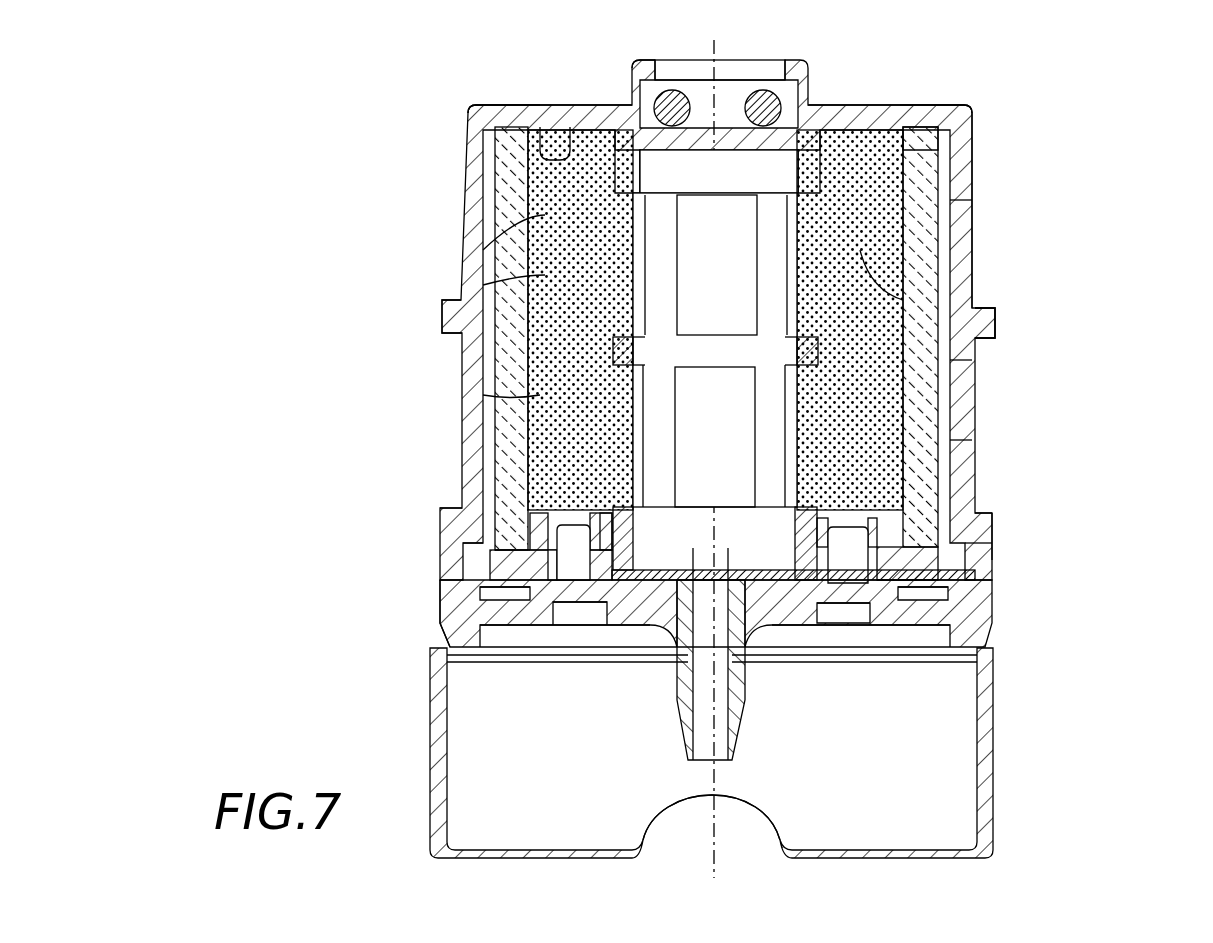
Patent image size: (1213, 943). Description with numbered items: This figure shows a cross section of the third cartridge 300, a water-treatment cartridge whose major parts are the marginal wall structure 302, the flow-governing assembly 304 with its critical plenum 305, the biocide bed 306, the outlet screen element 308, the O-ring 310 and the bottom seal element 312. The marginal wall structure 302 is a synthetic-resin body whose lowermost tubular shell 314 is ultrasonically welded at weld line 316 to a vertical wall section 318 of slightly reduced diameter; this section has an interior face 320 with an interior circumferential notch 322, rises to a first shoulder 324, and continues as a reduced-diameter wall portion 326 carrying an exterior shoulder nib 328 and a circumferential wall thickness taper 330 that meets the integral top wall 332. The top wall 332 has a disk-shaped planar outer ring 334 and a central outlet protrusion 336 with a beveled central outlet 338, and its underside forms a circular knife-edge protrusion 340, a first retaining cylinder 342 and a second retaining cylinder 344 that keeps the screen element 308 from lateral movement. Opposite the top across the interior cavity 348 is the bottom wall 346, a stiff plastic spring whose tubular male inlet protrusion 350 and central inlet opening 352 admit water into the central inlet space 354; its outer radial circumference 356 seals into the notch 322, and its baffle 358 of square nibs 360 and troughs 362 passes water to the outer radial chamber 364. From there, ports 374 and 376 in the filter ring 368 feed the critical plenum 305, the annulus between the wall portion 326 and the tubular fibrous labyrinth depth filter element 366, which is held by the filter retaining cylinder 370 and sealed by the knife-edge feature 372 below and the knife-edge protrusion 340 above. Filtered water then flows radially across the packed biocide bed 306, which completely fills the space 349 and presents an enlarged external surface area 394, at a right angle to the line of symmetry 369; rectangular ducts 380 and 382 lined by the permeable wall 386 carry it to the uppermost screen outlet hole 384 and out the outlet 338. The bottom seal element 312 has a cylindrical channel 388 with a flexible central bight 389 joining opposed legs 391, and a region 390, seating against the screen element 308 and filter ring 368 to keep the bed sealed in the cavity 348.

The third cartridge 300 is at (978, 108).
The marginal wall structure 302 is at (462, 161).
The flow-governing assembly 304 is at (962, 410).
The critical plenum 305 is at (478, 172).
The biocide bed 306 is at (940, 160).
The outlet screen element 308 is at (812, 118).
The O-ring 310 is at (772, 72).
The bottom seal element 312 is at (614, 530).
The lowermost tubular shell 314 is at (992, 700).
The weld line 316 is at (645, 680).
The vertical wall section 318 is at (960, 578).
The interior face 320 is at (950, 660).
The interior circumferential notch 322 is at (988, 626).
The first shoulder 324 is at (985, 500).
The reduced-diameter wall portion 326 is at (975, 440).
The exterior shoulder nib 328 is at (992, 326).
The circumferential wall thickness taper 330 is at (935, 232).
The top wall 332 is at (948, 106).
The disk-shaped planar outer ring 334 is at (488, 104).
The boss 336 is at (635, 75).
The beveled central outlet 338 is at (765, 62).
The circular knife-edge protrusion 340 is at (520, 148).
The first radially spaced retaining cylinder 342 is at (540, 215).
The second radially spaced retaining cylinder 344 is at (540, 275).
The bottom wall 346 is at (560, 630).
The interior cavity 348 is at (528, 292).
The space 349 is at (905, 300).
The tubular male inlet protrusion 350 is at (748, 745).
The central inlet opening 352 is at (705, 763).
The central inlet space 354 is at (730, 590).
The outer radial circumference 356 is at (440, 626).
The baffle 358 is at (575, 620).
The square nib 360 is at (825, 655).
The trough 362 is at (840, 640).
The outer radial chamber 364 is at (880, 645).
The tubular fibrous labyrinth depth filter element 366 is at (975, 372).
The filter ring 368 is at (985, 545).
The line of symmetry 369 is at (710, 827).
The filter retaining cylinder 370 is at (975, 462).
The knife-edge feature 372 is at (485, 522).
The port 374 is at (975, 566).
The port 376 is at (480, 568).
The rectangular duct 380 is at (745, 290).
The rectangular duct 382 is at (745, 408).
The uppermost screen outlet hole 384 is at (716, 158).
The permeable wall 386 is at (705, 290).
The cylindrical channel 388 is at (808, 470).
The flexible central bight 389 is at (555, 510).
The valve pocket wall 390 is at (610, 605).
The opposed legs 391 is at (585, 522).
The external surface area 394 is at (540, 395).